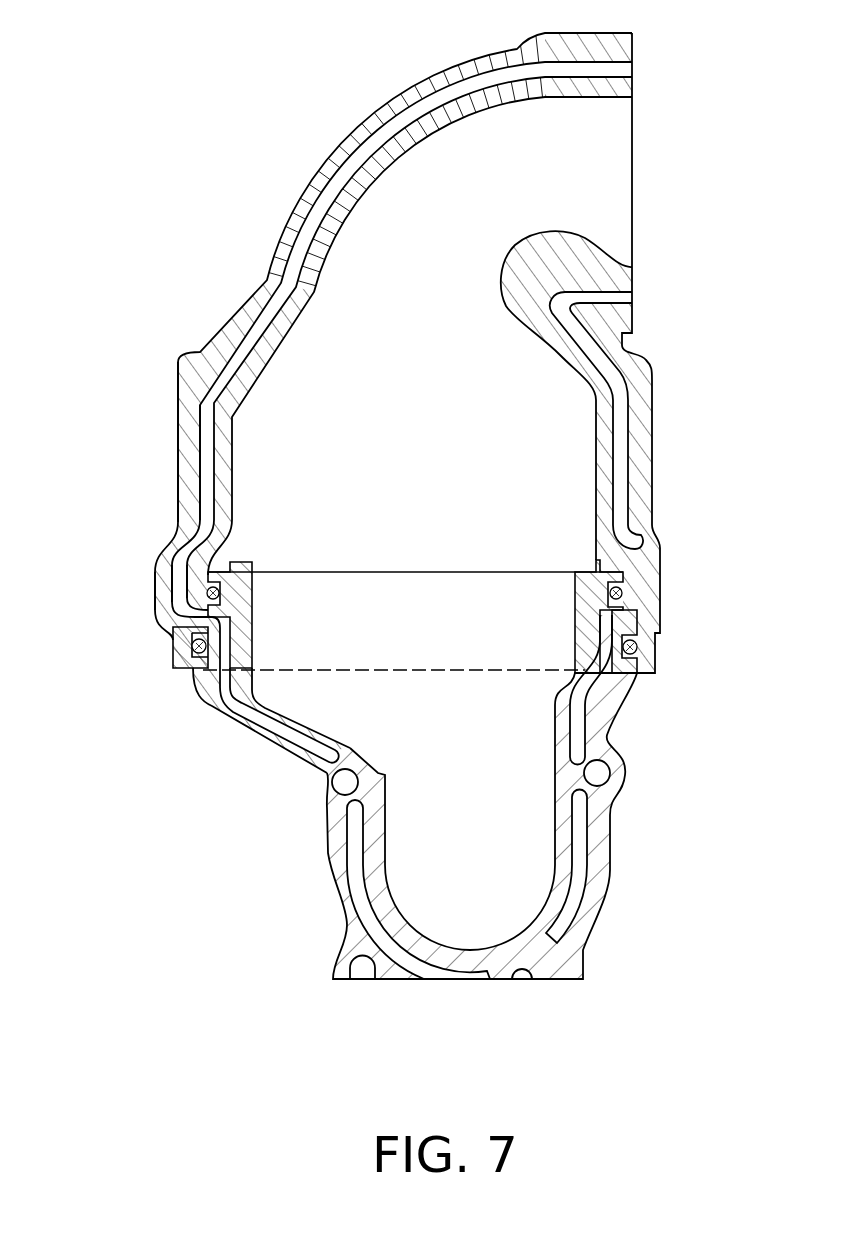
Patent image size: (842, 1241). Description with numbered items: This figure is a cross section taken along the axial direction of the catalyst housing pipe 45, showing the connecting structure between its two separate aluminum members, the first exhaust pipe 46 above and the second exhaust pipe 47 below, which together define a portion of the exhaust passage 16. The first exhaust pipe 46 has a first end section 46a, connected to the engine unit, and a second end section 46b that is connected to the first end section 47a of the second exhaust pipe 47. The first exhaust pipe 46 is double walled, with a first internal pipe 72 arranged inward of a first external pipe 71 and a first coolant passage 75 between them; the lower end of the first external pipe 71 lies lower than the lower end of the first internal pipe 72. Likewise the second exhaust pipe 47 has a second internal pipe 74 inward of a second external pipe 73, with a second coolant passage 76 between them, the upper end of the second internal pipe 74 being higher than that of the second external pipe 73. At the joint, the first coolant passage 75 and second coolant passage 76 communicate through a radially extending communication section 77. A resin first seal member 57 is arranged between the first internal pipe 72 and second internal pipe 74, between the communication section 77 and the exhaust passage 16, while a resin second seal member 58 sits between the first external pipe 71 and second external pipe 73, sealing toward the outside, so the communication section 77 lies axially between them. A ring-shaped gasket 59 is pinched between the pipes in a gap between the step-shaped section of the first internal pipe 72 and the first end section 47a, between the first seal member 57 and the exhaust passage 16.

The exhaust passage 16 is at (387, 505).
The catalyst housing pipe 45 is at (414, 406).
The first exhaust pipe 46 is at (357, 389).
The first end section 46a is at (648, 157).
The second end section 46b is at (437, 684).
The second exhaust pipe 47 is at (475, 729).
The first end section 47a is at (476, 561).
The first seal member 57 is at (228, 598).
The second seal member 58 is at (173, 645).
The gasket 59 is at (207, 585).
The first external pipe 71 is at (183, 432).
The first internal pipe 72 is at (237, 381).
The second external pipe 73 is at (210, 702).
The second internal pipe 74 is at (273, 740).
The first coolant passage 75 is at (400, 127).
The second coolant passage 76 is at (303, 745).
The communication section 77 is at (196, 622).